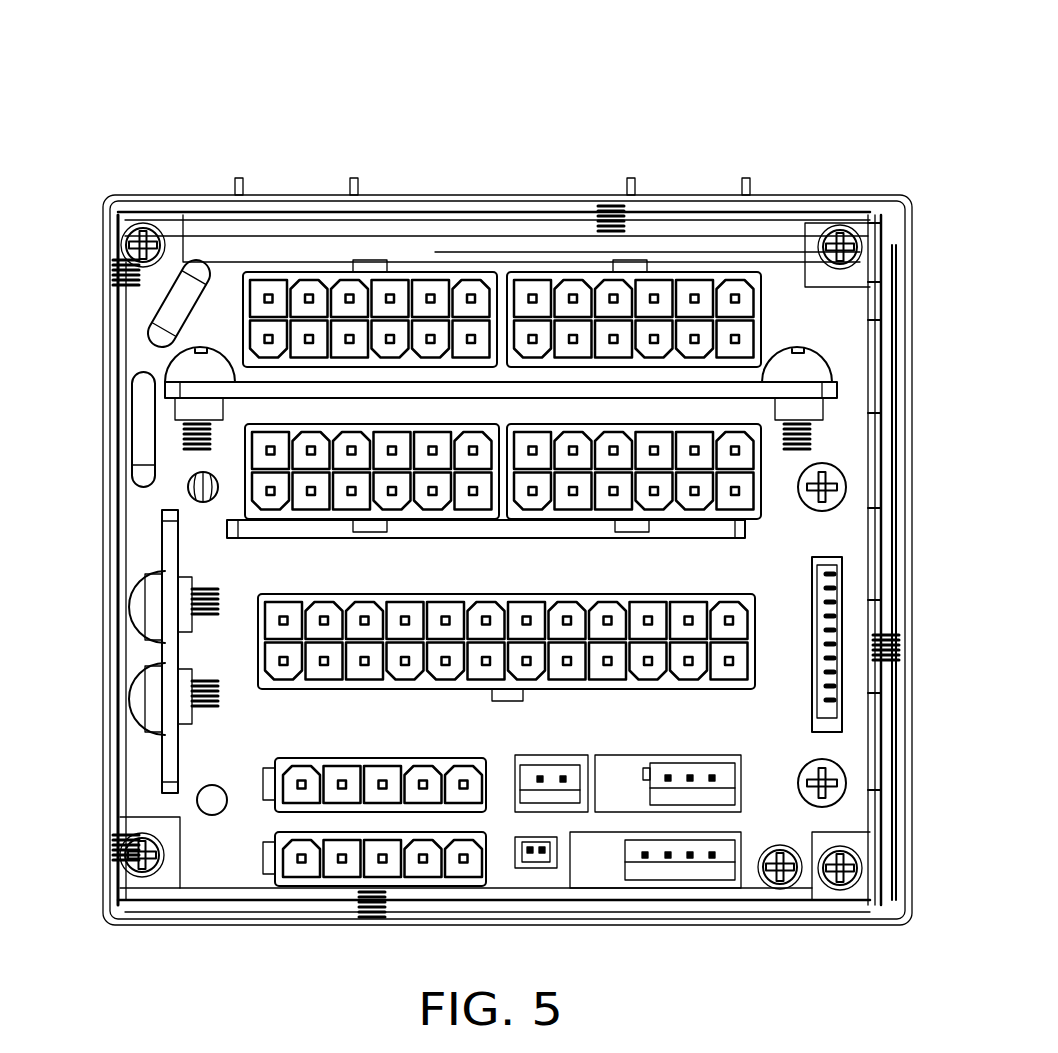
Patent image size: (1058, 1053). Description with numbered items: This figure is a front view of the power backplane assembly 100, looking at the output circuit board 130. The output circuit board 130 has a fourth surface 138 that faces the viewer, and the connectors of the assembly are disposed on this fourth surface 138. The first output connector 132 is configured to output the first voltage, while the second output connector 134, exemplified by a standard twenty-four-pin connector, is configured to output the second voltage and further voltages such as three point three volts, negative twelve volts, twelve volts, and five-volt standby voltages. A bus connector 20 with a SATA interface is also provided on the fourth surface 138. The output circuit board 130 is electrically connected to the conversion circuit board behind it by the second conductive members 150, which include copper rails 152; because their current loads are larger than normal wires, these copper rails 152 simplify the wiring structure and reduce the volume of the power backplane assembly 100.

The power backplane assembly 100 is at (505, 127).
The output circuit board 130 is at (507, 512).
The fourth surface 138 is at (820, 323).
The second conductive members 150 is at (558, 289).
The copper rails 152 is at (271, 390).
The first output connector 132 is at (243, 358).
The second output connector 134 is at (263, 647).
The bus connector 20 is at (842, 673).